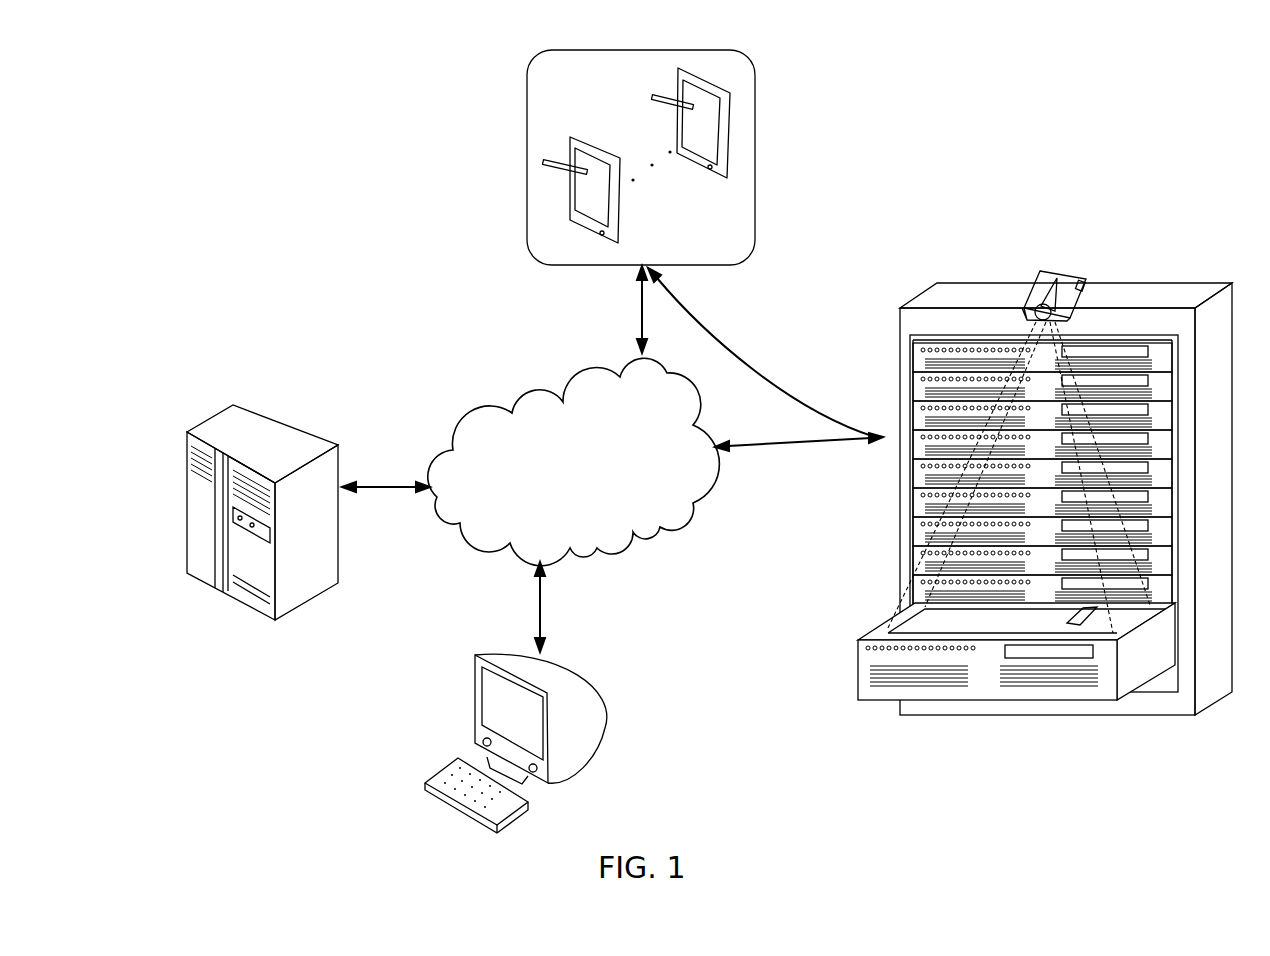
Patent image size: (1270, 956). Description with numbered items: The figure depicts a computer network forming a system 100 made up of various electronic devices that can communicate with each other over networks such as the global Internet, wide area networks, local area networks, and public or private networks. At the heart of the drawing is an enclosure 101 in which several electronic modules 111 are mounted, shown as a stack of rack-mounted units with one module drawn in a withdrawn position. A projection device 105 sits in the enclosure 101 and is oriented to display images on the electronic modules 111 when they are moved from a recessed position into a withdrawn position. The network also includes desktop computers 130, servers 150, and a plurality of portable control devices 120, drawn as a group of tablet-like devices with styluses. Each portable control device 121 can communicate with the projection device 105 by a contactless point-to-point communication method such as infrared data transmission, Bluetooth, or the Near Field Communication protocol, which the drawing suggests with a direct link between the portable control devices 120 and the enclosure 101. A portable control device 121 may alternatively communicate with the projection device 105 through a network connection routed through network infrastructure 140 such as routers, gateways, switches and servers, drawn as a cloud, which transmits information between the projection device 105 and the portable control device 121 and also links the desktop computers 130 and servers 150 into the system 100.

The system 100 is at (228, 158).
The enclosure 101 is at (1141, 286).
The projection device 105 is at (1059, 258).
The electronic modules 111 is at (895, 488).
The portable control devices 120 is at (582, 90).
The portable control device 121 is at (552, 192).
The desktop computers 130 is at (594, 763).
The network infrastructure 140 is at (657, 433).
The servers 150 is at (280, 444).